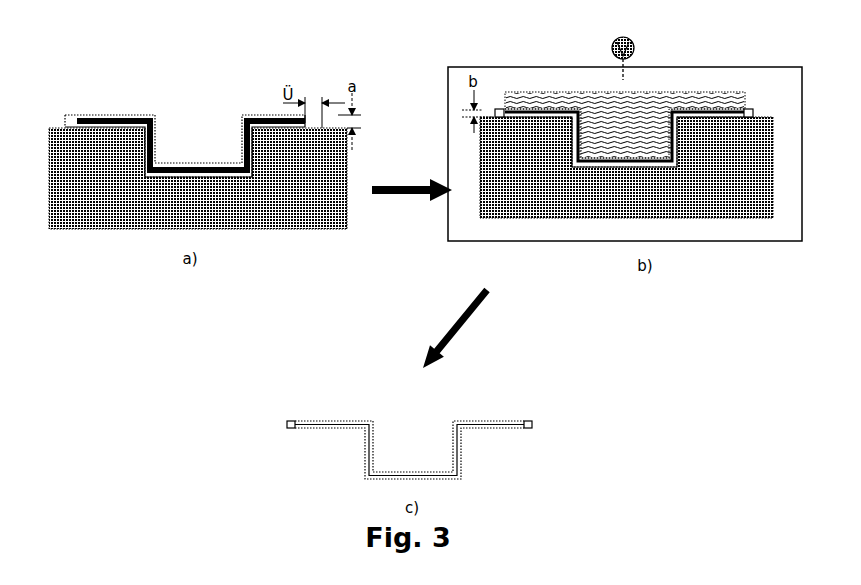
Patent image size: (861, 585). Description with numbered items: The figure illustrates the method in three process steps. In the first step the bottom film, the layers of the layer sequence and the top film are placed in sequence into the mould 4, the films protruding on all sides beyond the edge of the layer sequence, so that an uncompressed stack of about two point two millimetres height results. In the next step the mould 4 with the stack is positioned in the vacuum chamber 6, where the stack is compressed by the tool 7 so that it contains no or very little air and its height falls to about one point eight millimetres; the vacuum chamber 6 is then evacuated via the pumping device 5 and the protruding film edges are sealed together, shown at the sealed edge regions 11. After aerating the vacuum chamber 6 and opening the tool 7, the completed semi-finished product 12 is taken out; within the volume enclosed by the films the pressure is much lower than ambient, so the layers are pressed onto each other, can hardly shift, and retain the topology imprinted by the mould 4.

The mould 4 is at (55, 173).
The pumping device 5 is at (633, 44).
The vacuum chamber 6 is at (555, 92).
The tool 7 is at (650, 100).
The seals / clamps 11 is at (499, 108).
The semi-finished product 12 is at (319, 417).